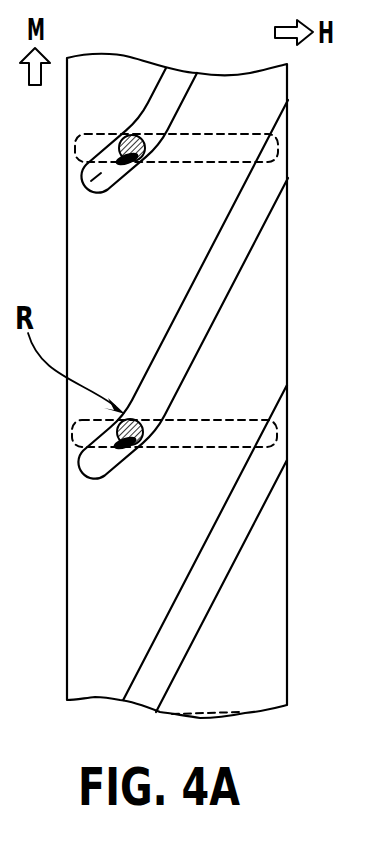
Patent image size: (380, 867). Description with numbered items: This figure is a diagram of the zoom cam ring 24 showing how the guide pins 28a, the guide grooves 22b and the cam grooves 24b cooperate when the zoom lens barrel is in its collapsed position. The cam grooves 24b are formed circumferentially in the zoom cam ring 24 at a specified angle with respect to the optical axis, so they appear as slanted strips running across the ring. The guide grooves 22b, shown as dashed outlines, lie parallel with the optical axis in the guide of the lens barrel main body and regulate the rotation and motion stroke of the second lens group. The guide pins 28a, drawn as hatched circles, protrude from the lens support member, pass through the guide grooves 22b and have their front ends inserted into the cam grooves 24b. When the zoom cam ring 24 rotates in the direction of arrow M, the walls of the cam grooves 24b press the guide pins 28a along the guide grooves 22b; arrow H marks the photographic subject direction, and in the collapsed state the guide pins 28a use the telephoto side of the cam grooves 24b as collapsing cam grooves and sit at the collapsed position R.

The zoom cam ring 24 is at (268, 618).
The cam grooves 24b is at (212, 287).
The guide grooves 22b is at (225, 150).
The guide pins 28a is at (140, 163).